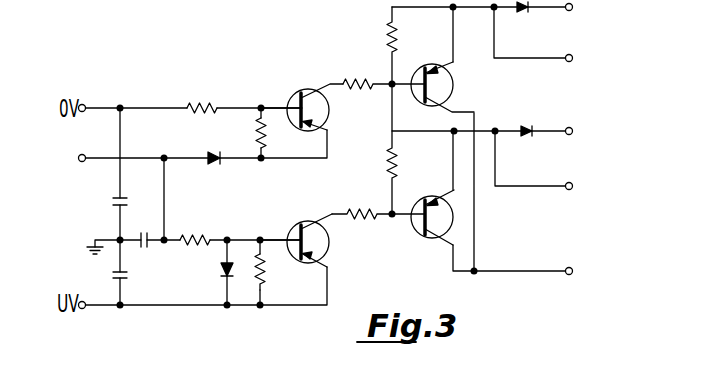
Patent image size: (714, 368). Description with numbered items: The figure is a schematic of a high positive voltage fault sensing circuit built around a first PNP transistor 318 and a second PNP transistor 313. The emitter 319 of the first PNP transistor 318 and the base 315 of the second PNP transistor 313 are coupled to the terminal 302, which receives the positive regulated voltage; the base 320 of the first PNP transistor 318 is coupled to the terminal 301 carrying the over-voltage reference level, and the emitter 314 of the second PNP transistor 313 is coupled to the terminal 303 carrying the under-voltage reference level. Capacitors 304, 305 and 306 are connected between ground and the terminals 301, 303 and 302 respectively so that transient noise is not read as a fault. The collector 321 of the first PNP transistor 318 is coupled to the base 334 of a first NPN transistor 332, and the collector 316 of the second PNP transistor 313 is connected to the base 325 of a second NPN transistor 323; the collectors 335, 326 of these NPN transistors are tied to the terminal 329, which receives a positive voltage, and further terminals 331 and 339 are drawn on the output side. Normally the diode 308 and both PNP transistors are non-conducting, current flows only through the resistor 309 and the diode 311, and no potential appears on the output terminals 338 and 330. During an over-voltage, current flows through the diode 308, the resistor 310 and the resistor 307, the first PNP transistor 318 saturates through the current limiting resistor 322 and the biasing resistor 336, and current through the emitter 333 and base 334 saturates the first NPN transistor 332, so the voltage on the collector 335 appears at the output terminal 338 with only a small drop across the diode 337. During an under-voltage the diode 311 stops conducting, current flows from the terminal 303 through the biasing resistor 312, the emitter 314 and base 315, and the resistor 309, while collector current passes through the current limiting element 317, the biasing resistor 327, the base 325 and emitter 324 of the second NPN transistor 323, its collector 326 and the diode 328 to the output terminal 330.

The terminal 301 is at (84, 104).
The terminal 302 is at (78, 158).
The terminal 303 is at (82, 309).
The capacitor 304 is at (115, 203).
The capacitor 305 is at (129, 281).
The capacitor 306 is at (151, 244).
The resistor 307 is at (197, 104).
The diode 308 is at (212, 163).
The current limiting resistor 309 is at (200, 237).
The resistor 310 is at (256, 138).
The diode 311 is at (222, 278).
The biasing resistor 312 is at (264, 277).
The second PNP transistor 313 is at (309, 245).
The emitter 314 is at (322, 262).
The base 315 is at (295, 232).
The collector 316 is at (329, 241).
The current limiting resistor 317 is at (350, 212).
The first PNP transistor 318 is at (305, 101).
The emitter 319 is at (322, 126).
The base 320 is at (292, 101).
The collector 321 is at (326, 100).
The current limiting resistor 322 is at (343, 80).
The second NPN transistor 323 is at (441, 224).
The emitter 324 is at (436, 203).
The base 325 is at (412, 222).
The collector 326 is at (454, 230).
The biasing resistor 327 is at (388, 165).
The diode 328 is at (526, 126).
The terminal 329 is at (573, 272).
The output terminal 330 is at (573, 132).
The output terminal 331 is at (573, 187).
The first NPN transistor 332 is at (440, 73).
The emitter 333 is at (437, 66).
The base 334 is at (412, 94).
The collector 335 is at (448, 99).
The biasing resistor 336 is at (388, 38).
The diode 337 is at (520, 14).
The output terminal 338 is at (573, 9).
The output terminal 339 is at (573, 60).